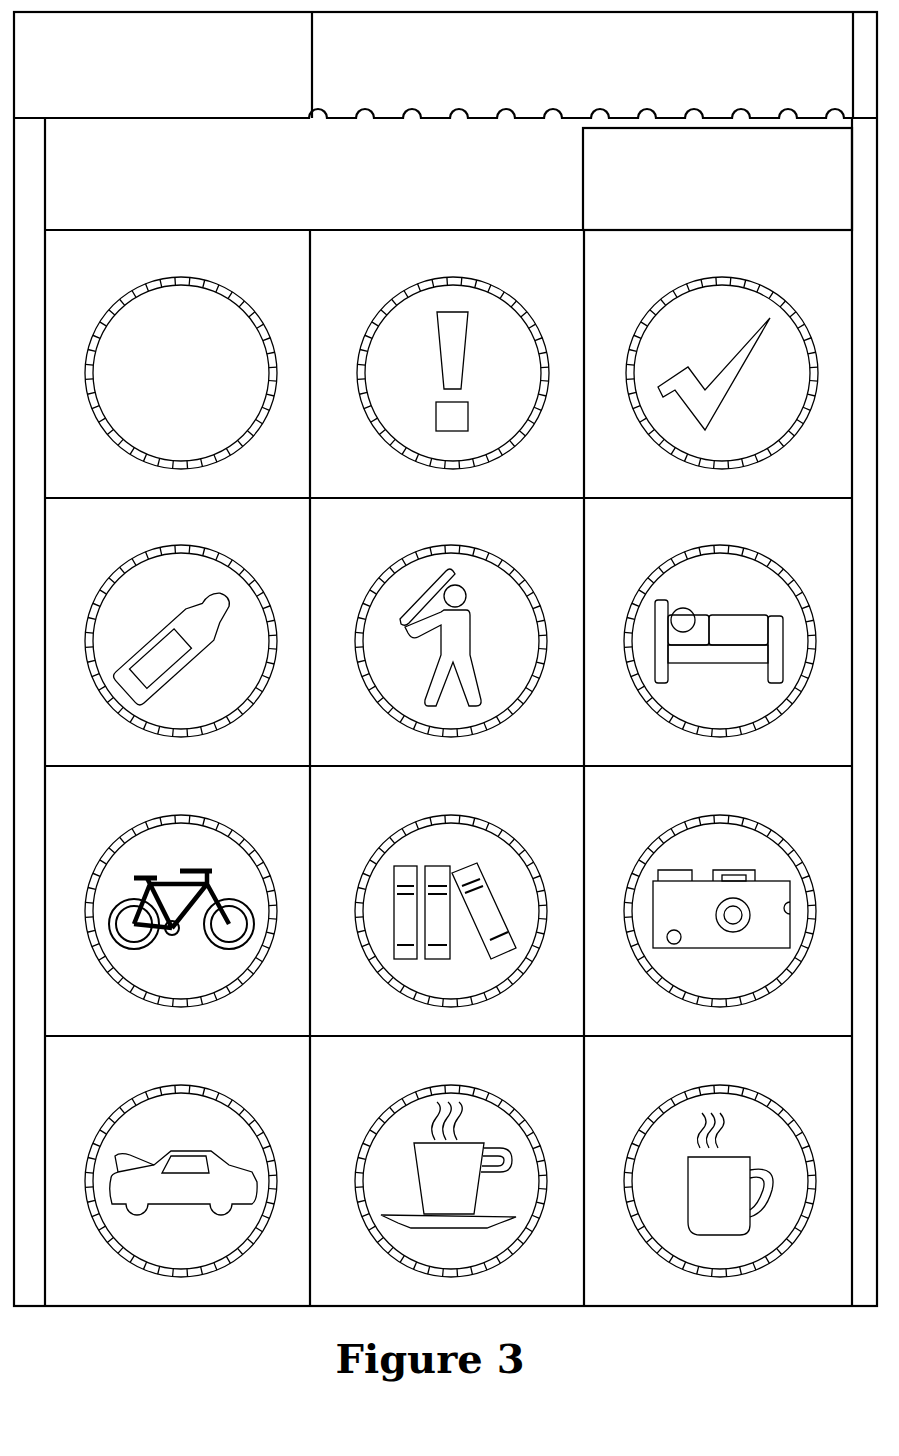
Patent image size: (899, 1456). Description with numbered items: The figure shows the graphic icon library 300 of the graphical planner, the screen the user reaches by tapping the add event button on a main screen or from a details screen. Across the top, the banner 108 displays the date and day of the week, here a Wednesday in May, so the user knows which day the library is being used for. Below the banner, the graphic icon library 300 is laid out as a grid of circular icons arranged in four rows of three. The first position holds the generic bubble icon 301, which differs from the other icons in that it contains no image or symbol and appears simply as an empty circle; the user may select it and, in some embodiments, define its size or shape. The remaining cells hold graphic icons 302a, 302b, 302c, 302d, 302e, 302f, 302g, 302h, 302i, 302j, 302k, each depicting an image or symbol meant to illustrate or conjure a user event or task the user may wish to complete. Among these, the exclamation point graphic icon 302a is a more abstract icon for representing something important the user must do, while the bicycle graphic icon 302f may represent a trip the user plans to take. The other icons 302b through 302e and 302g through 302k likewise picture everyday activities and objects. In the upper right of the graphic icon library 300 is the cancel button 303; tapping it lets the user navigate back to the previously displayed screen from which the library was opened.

The banner 108 is at (380, 97).
The graphic icon library 300 is at (112, 250).
The generic bubble icon 301 is at (156, 268).
The exclamation point graphic icon 302a is at (420, 268).
The graphic icon 302b is at (690, 268).
The graphic icon 302c is at (150, 536).
The graphic icon 302d is at (419, 536).
The graphic icon 302e is at (690, 536).
The bicycle graphic icon 302f is at (152, 805).
The graphic icon 302g is at (419, 803).
The graphic icon 302h is at (690, 805).
The graphic icon 302i is at (152, 1075).
The graphic icon 302j is at (424, 1074).
The graphic icon 302k is at (690, 1075).
The cancel button 303 is at (583, 178).